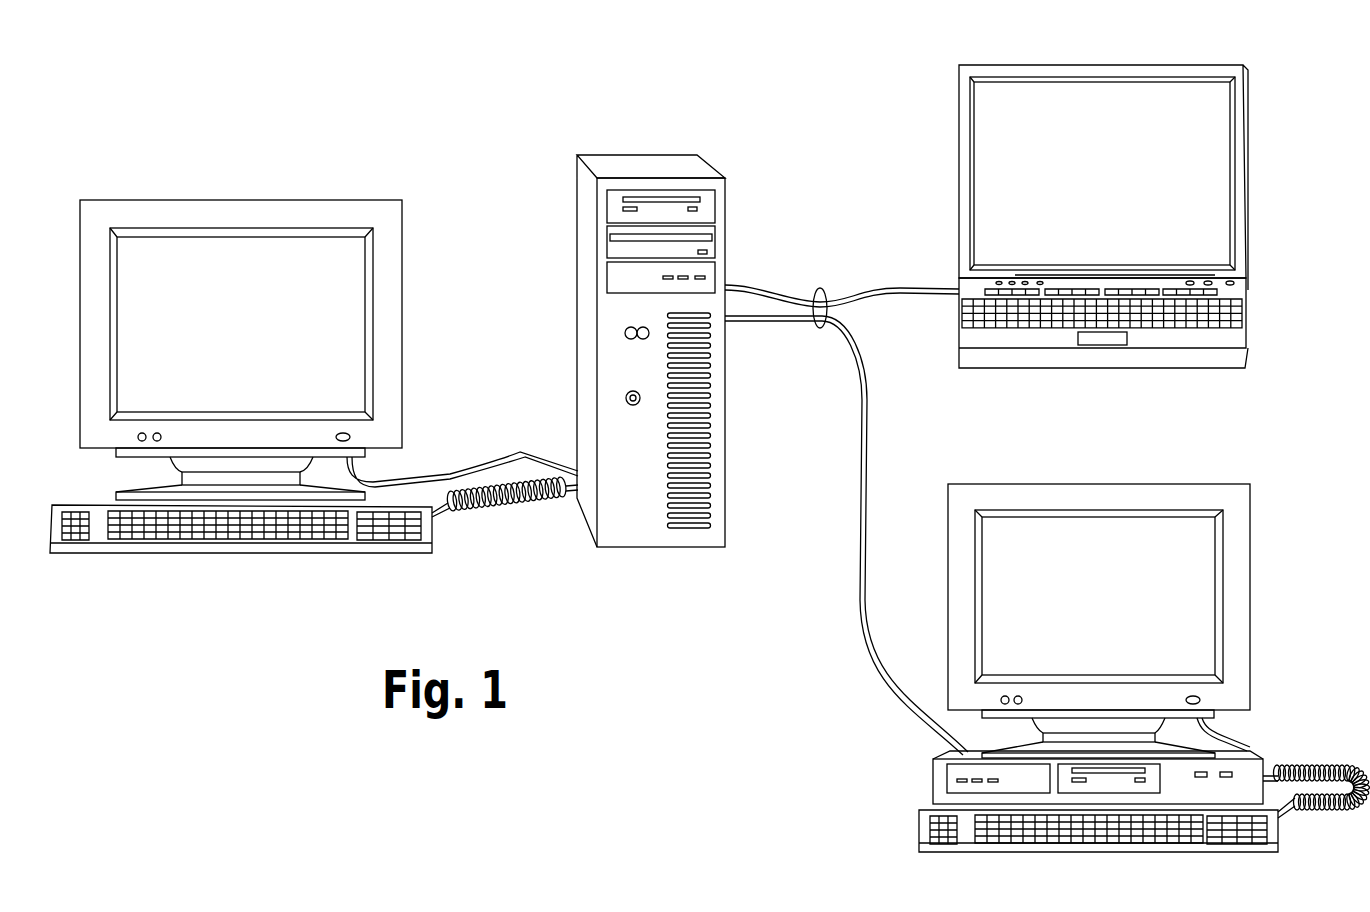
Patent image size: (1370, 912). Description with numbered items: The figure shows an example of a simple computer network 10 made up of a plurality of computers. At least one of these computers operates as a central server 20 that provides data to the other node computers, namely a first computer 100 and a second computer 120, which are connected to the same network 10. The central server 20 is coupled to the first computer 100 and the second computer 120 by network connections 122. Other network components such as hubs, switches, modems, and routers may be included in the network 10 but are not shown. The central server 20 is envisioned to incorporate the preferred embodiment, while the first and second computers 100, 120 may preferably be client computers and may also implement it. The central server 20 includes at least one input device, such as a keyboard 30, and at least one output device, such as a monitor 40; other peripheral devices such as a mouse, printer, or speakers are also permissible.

The computer network 10 is at (362, 98).
The central server 20 is at (577, 392).
The keyboard 30 is at (95, 552).
The monitor 40 is at (102, 448).
The first computer 100 is at (958, 157).
The second computer 120 is at (932, 768).
The network connections 122 is at (822, 288).